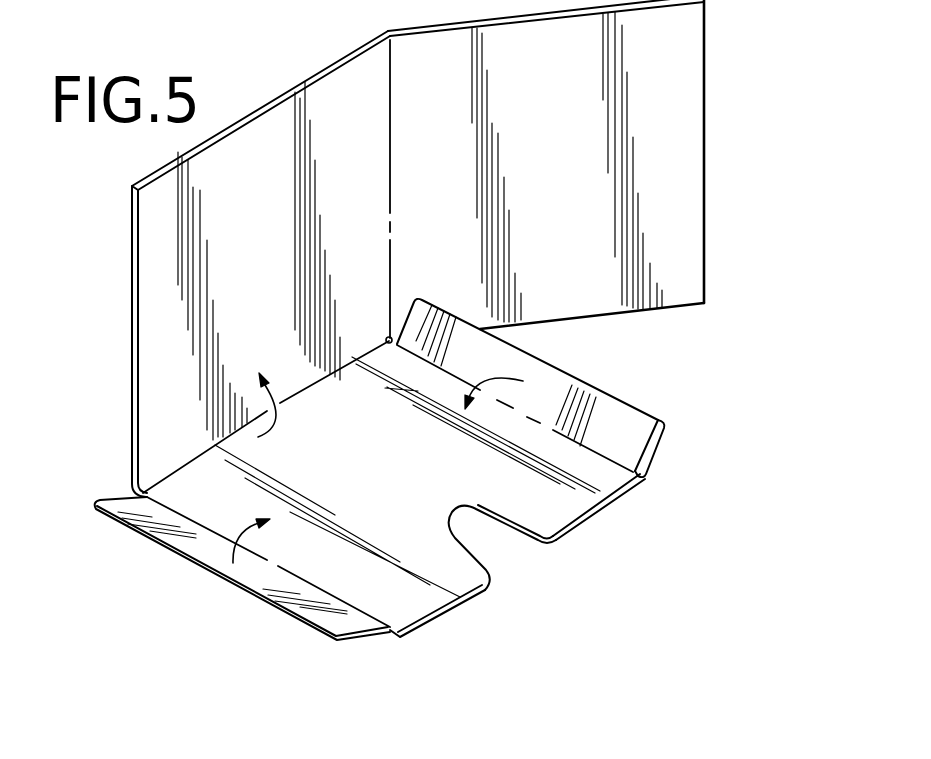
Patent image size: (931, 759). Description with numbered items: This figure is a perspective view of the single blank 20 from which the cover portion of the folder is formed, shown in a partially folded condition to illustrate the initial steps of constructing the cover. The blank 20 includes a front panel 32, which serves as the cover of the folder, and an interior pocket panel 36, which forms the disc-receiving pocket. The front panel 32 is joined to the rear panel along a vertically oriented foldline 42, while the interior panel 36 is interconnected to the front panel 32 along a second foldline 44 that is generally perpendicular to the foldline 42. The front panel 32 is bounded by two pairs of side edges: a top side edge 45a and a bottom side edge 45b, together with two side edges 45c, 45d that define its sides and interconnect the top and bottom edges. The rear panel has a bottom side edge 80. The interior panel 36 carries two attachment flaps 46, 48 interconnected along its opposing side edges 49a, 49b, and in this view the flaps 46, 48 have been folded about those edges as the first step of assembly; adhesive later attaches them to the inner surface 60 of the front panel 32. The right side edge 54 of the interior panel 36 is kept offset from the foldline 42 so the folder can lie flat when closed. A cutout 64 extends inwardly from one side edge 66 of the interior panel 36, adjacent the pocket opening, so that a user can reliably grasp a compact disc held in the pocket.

The blank 20 is at (716, 90).
The front panel 32 is at (156, 179).
The interior pocket panel 36 is at (462, 567).
The foldline 42 is at (392, 194).
The second foldline 44 is at (336, 370).
The top side edge 45a is at (309, 78).
The bottom side edge 45b is at (293, 392).
The side edge 45c is at (134, 337).
The side edge 45d is at (389, 217).
The flap 46 is at (603, 430).
The flap 48 is at (203, 565).
The side edge 49a is at (613, 462).
The side edge 49b is at (303, 578).
The right side edge 54 is at (389, 336).
The inner surface 60 is at (260, 224).
The cutout 64 is at (503, 538).
The side edge 66 is at (598, 516).
The bottom side edge 80 is at (579, 313).